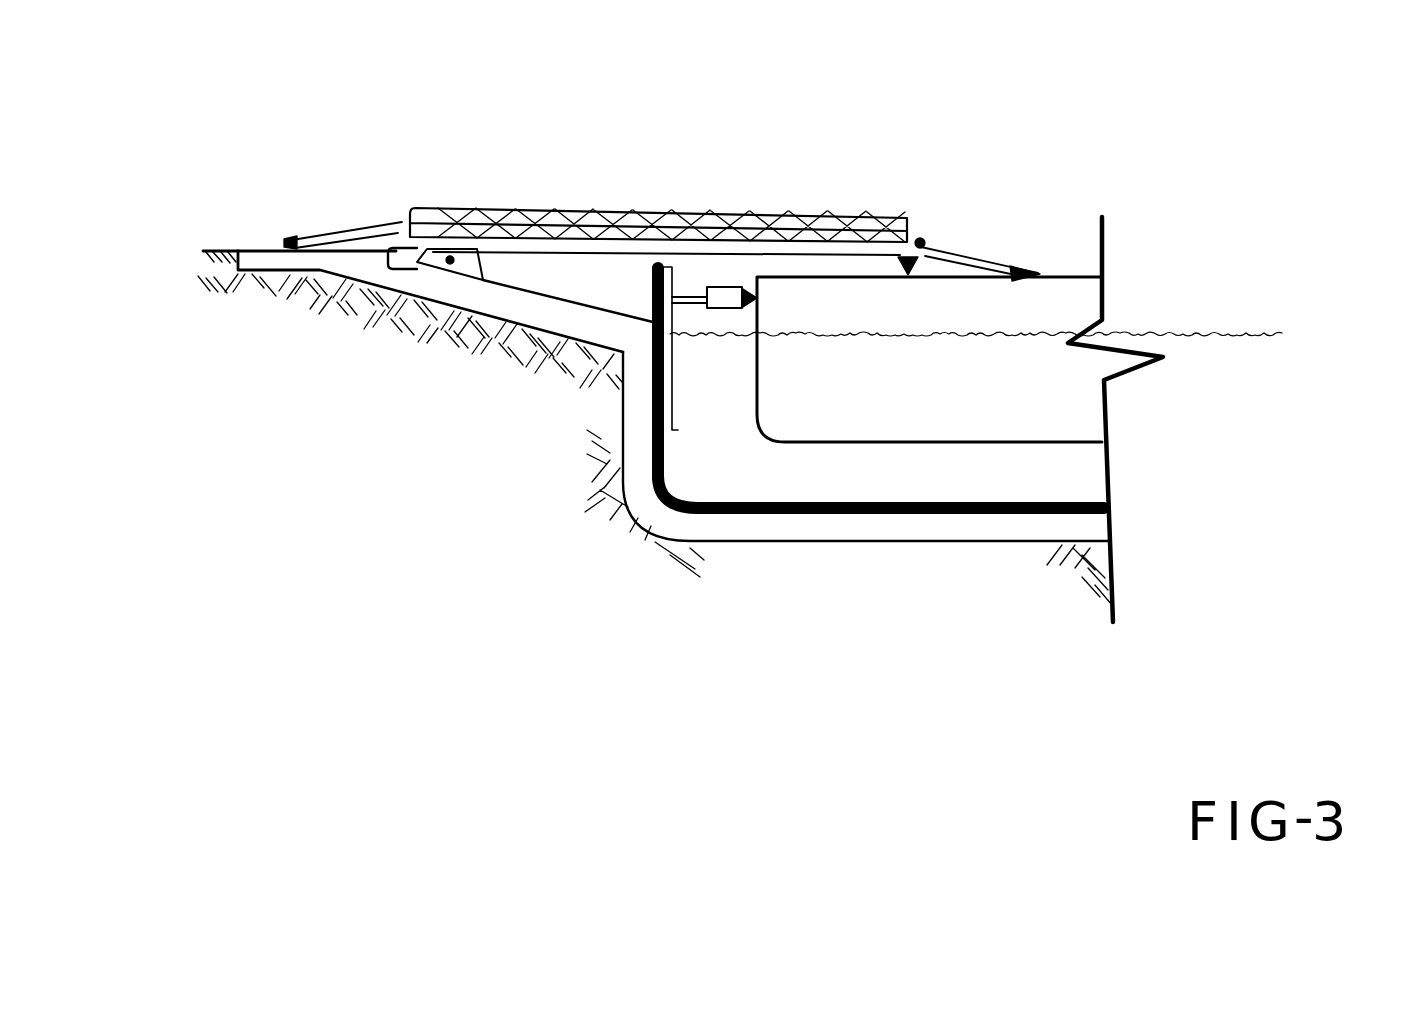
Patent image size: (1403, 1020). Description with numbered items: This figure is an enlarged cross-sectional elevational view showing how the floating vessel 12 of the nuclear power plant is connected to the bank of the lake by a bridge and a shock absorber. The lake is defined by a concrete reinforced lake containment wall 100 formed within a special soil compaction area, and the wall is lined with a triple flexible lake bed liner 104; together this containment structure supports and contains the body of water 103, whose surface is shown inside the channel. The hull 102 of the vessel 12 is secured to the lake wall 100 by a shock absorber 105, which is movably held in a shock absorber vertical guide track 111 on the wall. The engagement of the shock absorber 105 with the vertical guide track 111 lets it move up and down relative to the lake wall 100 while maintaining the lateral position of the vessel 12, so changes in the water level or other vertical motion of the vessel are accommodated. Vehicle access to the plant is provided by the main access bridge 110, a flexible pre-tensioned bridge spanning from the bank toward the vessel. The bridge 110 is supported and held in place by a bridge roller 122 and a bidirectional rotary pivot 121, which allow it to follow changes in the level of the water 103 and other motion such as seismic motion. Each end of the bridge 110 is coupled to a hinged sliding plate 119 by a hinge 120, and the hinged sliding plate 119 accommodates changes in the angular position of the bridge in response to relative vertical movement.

The vessel 12 is at (810, 437).
The lake containment wall 100 is at (927, 530).
The hull 102 is at (1047, 393).
The body of water 103 is at (1137, 330).
The lake bed liner 104 is at (1040, 517).
The shock absorber 105 is at (731, 296).
The main access bridge 110 is at (723, 212).
The shock absorber vertical guide track 111 is at (664, 381).
The hinged sliding plate 119 is at (320, 236).
The hinge 120 is at (403, 227).
The bidirectional rotary pivot 121 is at (500, 257).
The bridge roller 122 is at (905, 258).